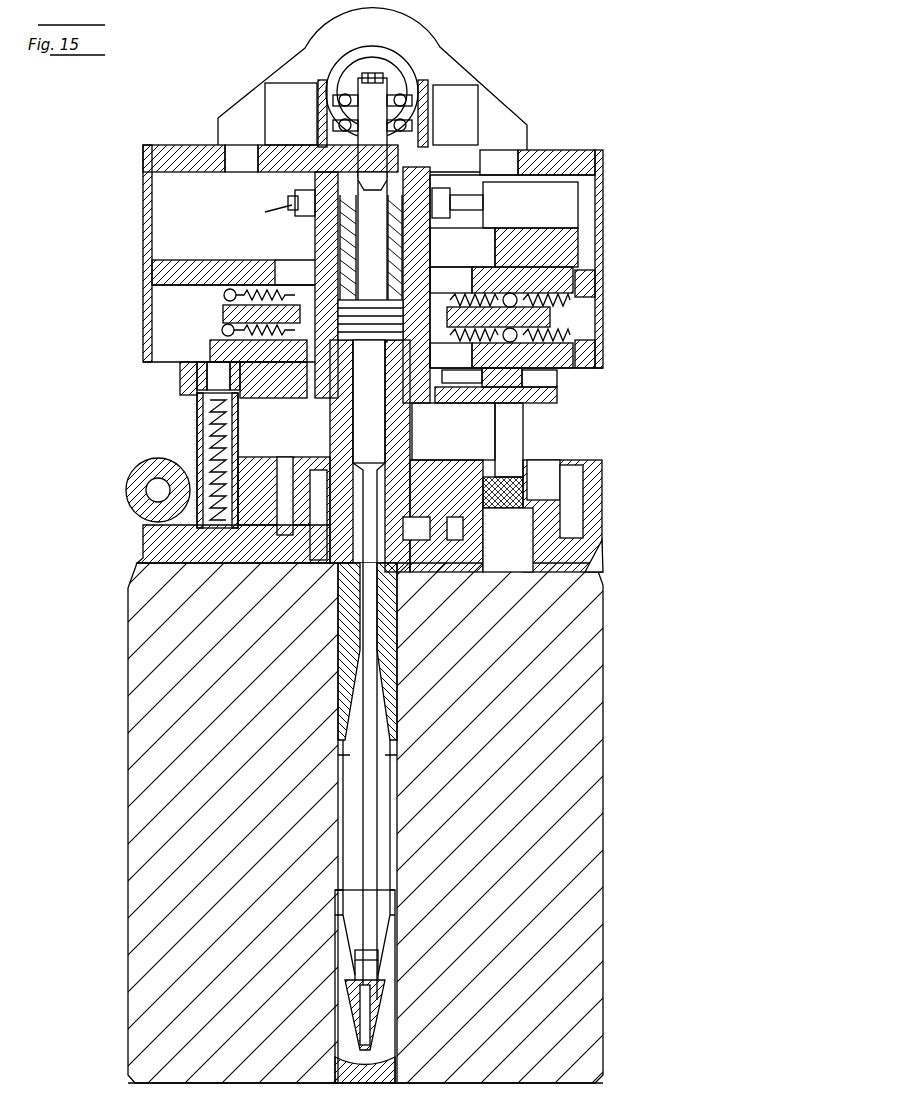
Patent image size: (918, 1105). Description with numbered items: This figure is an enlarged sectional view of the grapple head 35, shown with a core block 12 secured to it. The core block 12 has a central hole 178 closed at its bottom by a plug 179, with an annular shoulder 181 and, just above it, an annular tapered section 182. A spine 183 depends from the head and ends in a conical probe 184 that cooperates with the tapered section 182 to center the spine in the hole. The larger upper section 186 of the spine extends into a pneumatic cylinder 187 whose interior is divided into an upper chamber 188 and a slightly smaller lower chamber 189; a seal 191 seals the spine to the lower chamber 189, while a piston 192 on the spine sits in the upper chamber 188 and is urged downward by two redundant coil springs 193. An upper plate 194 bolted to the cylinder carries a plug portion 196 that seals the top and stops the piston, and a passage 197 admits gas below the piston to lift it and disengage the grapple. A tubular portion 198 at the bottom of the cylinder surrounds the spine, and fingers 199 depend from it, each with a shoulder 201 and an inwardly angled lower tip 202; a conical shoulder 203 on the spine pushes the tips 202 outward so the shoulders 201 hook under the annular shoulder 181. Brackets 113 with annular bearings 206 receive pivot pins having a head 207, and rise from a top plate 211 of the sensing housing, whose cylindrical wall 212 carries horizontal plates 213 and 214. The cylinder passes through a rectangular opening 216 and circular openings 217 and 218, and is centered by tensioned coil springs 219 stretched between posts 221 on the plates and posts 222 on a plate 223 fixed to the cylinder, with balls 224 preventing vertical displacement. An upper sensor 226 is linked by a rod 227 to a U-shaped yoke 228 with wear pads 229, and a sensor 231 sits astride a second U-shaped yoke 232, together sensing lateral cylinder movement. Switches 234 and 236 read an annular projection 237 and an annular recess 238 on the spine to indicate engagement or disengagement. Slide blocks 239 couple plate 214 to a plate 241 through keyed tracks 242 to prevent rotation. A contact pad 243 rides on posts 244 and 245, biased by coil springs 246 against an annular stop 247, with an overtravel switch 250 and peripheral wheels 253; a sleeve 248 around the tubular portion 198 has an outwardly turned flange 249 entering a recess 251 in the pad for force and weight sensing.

The core block 12 is at (600, 612).
The grapple head 35 is at (113, 380).
The bracket 113 is at (485, 105).
The central hole 178 is at (398, 1043).
The plug 179 is at (360, 1083).
The annular shoulder 181 is at (395, 880).
The annular tapered section 182 is at (392, 760).
The spine 183 is at (375, 795).
The conical probe 184 is at (388, 1010).
The upper section of the spine 186 is at (392, 440).
The pneumatic cylinder 187 is at (412, 248).
The upper chamber 188 is at (415, 262).
The lower chamber 189 is at (380, 468).
The seal 191 is at (404, 415).
The piston 192 is at (501, 281).
The coil springs 193 is at (408, 235).
The upper plate 194 is at (500, 160).
The plug portion 196 is at (560, 160).
The passage 197 is at (263, 215).
The tubular portion 198 is at (500, 460).
The fingers 199 is at (395, 915).
The shoulder 201 is at (400, 900).
The lower tip 202 is at (380, 955).
The conical shoulder 203 is at (362, 978).
The annular bearings 206 is at (408, 62).
The head 207 is at (395, 98).
The top plate 211 is at (165, 145).
The cylindrical wall 212 is at (143, 185).
The horizontal plate 213 is at (148, 272).
The horizontal plate 214 is at (222, 332).
The rectangular opening 216 is at (235, 160).
The circular opening 217 is at (290, 262).
The circular opening 218 is at (360, 345).
The coil springs 219 is at (222, 350).
The posts 221 is at (575, 318).
The posts 222 is at (262, 385).
The plate 223 is at (222, 312).
The balls 224 is at (501, 355).
The upper sensor 226 is at (598, 178).
The rod 227 is at (468, 202).
The U-shaped yoke 228 is at (302, 215).
The wear pads 229 is at (293, 198).
The sensor 231 is at (580, 240).
The U-shaped yoke 232 is at (500, 240).
The switches 234 is at (373, 115).
The switches 236 is at (372, 115).
The annular projection 237 is at (400, 82).
The annular recess 238 is at (470, 150).
The slide blocks 239 is at (555, 378).
The plate 241 is at (558, 403).
The keyed tracks 242 is at (560, 390).
The contact pad 243 is at (140, 546).
The posts 244 is at (200, 422).
The posts 245 is at (508, 415).
The coil springs 246 is at (208, 440).
The annular stop 247 is at (490, 510).
The sleeve 248 is at (318, 562).
The outwardly turned flange 249 is at (285, 540).
The overtravel switch 250 is at (585, 492).
The recess 251 is at (508, 540).
The wheels 253 is at (127, 480).